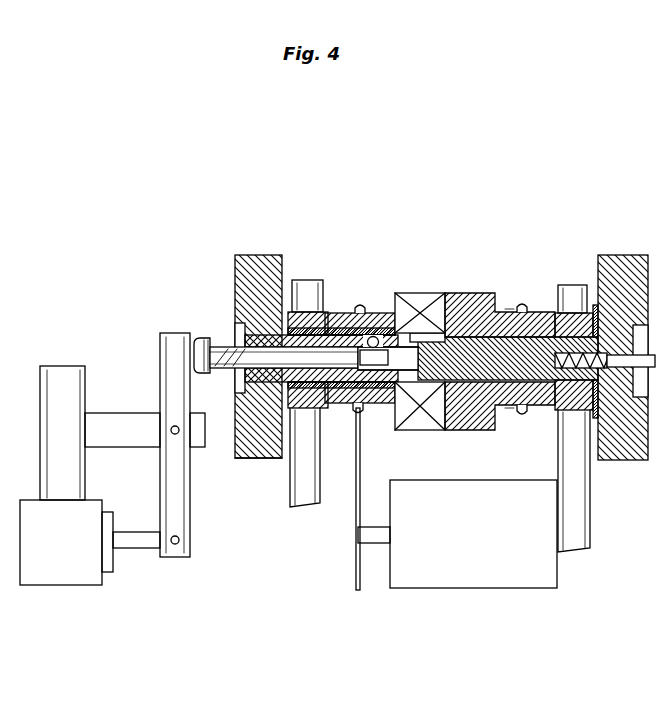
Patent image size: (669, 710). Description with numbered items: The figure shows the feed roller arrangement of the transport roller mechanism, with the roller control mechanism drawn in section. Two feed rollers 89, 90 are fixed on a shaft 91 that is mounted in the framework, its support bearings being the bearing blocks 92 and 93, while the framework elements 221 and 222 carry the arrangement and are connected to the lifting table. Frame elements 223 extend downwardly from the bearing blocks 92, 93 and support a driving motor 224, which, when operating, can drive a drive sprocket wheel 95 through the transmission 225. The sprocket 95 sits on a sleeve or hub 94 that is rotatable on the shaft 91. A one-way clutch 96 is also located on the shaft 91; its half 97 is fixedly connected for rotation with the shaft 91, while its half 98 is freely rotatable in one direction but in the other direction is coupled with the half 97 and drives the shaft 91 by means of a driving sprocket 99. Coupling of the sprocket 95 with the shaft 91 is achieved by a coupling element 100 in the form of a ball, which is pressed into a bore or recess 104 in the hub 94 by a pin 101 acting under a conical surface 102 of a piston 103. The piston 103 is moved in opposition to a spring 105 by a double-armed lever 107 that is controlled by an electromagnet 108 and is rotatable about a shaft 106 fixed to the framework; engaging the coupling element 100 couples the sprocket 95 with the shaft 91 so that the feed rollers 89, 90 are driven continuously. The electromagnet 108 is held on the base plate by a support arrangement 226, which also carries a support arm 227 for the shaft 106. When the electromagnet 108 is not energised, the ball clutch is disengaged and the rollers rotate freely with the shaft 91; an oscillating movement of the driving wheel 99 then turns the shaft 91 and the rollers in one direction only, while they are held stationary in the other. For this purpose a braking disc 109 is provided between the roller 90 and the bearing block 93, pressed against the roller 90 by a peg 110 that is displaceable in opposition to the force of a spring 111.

The feed roller 89 is at (252, 460).
The feed roller 90 is at (598, 265).
The shaft 91 is at (279, 460).
The support bearing 92 is at (322, 410).
The support bearing 93 is at (572, 412).
The sleeve or hub 94 is at (356, 412).
The drive sprocket wheel 95 is at (361, 414).
The one-way clutch 96 is at (417, 348).
The clutch half 97 is at (413, 432).
The clutch half 98 is at (468, 432).
The driving sprocket 99 is at (521, 417).
The coupling element 100 is at (373, 336).
The pin 101 is at (385, 352).
The conical surface 102 is at (352, 338).
The piston 103 is at (262, 356).
The bore or recess 104 is at (400, 338).
The spring 105 is at (222, 348).
The shaft 106 is at (173, 433).
The double-armed lever 107 is at (183, 560).
The electromagnet 108 is at (60, 578).
The braking disc 109 is at (590, 425).
The peg 110 is at (622, 368).
The spring 111 is at (548, 340).
The framework element 221 is at (303, 290).
The framework element 222 is at (562, 293).
The frame element 223 is at (304, 490).
The driving motor 224 is at (453, 592).
The transmission 225 is at (357, 548).
The support arrangement 226 is at (62, 378).
The support arm 227 is at (127, 420).